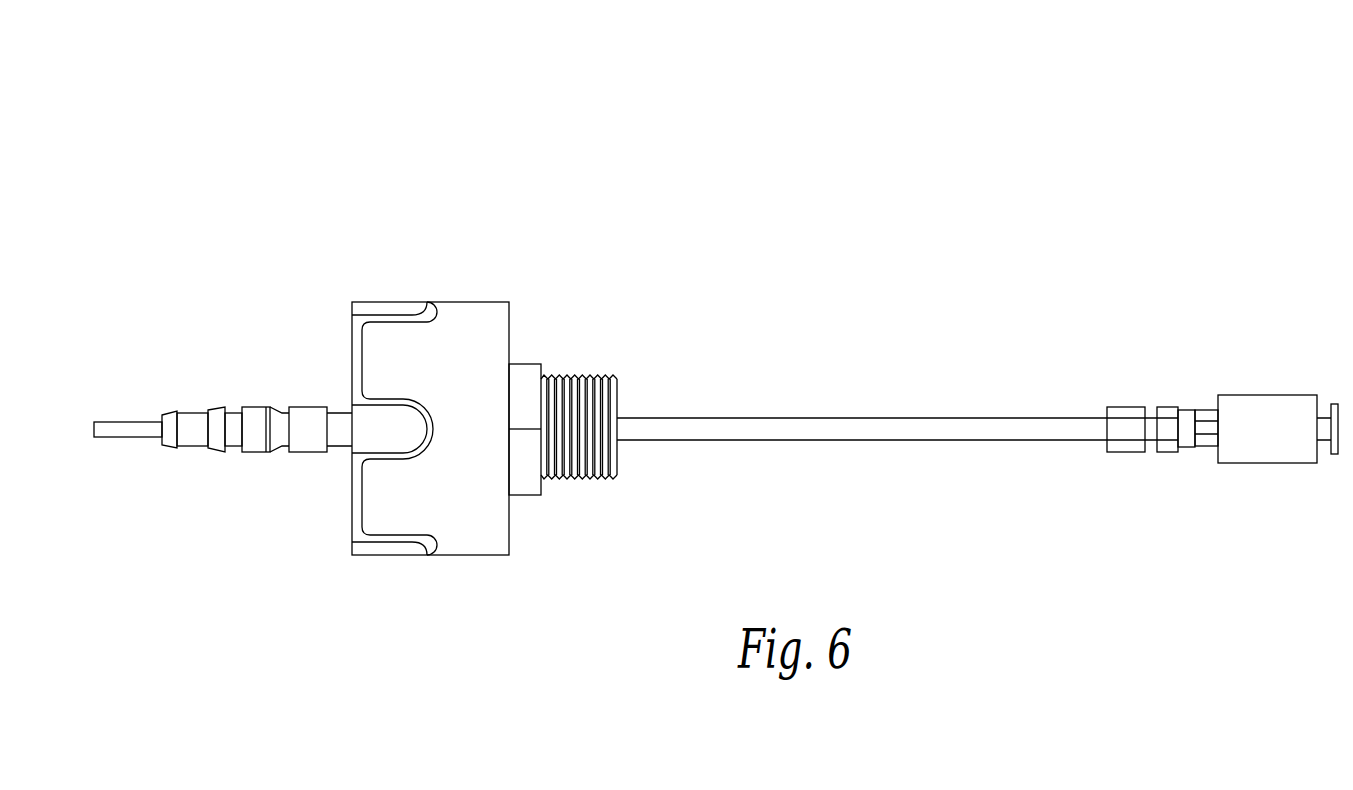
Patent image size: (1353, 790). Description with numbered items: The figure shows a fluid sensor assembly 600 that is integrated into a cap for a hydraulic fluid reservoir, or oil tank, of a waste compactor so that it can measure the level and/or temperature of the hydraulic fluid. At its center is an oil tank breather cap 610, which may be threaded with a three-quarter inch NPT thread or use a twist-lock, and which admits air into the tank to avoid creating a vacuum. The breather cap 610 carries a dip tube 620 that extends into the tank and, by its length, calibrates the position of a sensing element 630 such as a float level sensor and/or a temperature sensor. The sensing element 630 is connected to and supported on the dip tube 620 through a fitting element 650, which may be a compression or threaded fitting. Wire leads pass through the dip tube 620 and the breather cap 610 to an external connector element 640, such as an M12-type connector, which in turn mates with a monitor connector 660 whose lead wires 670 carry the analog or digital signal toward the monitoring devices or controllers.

The fluid sensor assembly 600 is at (233, 128).
The oil tank breather cap 610 is at (458, 323).
The dip tube 620 is at (842, 427).
The sensing element 630 is at (1267, 415).
The external connector element 640 is at (255, 420).
The fitting element 650 is at (1167, 413).
The monitor connector 660 is at (165, 420).
The lead wires 670 is at (108, 432).